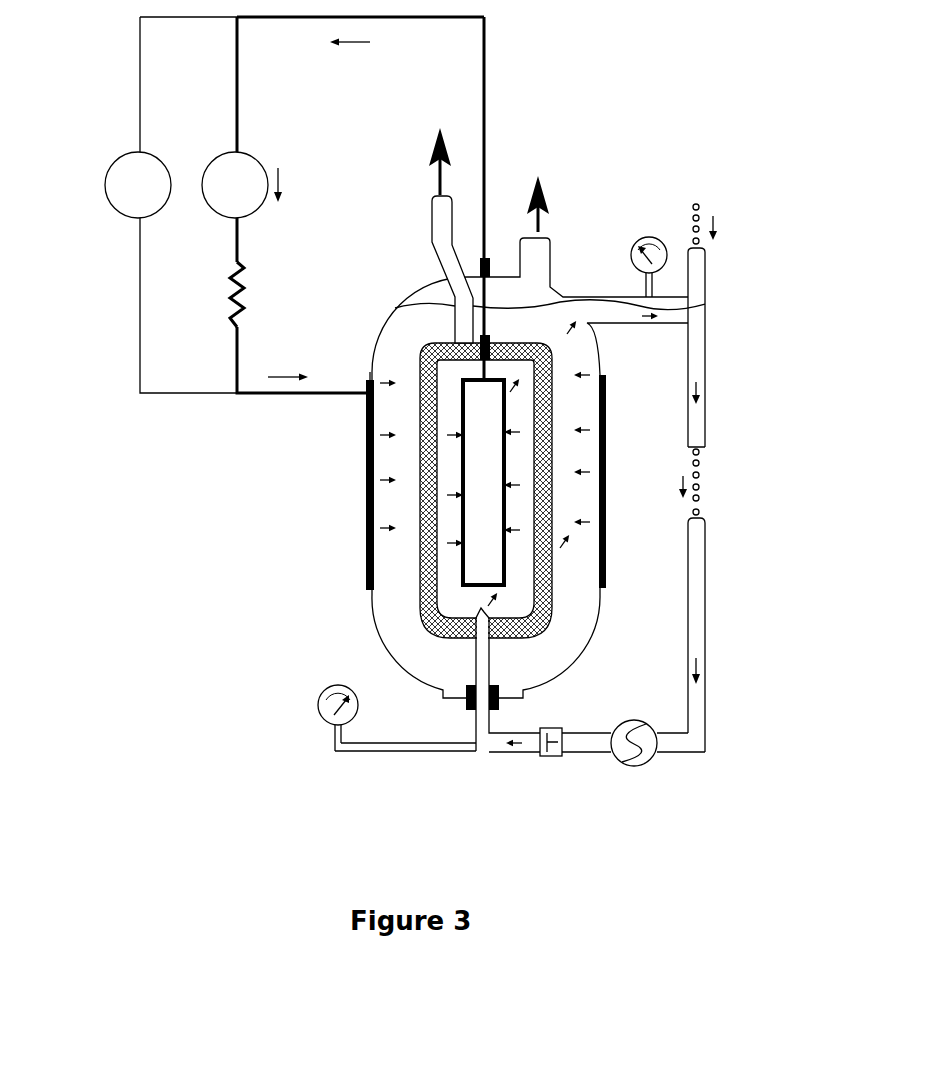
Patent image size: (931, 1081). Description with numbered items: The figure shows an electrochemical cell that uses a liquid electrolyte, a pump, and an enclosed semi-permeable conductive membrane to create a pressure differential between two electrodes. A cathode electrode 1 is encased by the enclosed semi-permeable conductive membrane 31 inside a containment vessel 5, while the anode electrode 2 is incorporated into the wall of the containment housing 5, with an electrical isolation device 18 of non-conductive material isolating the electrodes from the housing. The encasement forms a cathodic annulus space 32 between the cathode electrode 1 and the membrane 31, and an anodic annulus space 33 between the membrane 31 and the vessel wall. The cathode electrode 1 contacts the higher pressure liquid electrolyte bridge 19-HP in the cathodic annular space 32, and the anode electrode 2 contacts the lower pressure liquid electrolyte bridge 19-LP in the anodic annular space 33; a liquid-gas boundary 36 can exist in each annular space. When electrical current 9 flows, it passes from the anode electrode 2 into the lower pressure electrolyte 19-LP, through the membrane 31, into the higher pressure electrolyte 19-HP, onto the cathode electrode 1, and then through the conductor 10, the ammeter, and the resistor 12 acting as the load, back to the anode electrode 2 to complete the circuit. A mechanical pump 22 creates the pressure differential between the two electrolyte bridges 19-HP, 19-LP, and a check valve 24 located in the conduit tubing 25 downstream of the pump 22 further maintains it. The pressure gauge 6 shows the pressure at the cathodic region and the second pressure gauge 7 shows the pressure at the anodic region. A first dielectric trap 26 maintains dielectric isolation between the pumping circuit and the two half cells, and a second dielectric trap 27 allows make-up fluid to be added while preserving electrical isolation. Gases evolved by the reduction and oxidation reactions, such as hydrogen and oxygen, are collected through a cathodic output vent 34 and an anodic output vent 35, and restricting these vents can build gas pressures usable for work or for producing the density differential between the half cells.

The conductor 10 is at (233, 87).
The electrical current 9 is at (283, 165).
The resistor 12 is at (225, 305).
The cathodic output vent 34 is at (430, 190).
The anodic output vent 35 is at (560, 195).
The liquid-gas boundary 36 is at (432, 305).
The electrical isolation device 18 is at (490, 258).
The cathode electrode 1 is at (480, 415).
The anode electrode 2 is at (368, 430).
The pressure gauge 7 is at (655, 238).
The second dielectric trap 27 is at (705, 215).
The first dielectric trap 26 is at (703, 487).
The conduit tubing 25 is at (705, 632).
The mechanical pump 22 is at (645, 773).
The check valve 24 is at (552, 757).
The enclosed semi-permeable conductive membrane 31 is at (547, 623).
The pressure gauge 6 is at (316, 718).
The containment vessel 5 is at (405, 665).
The lower pressure liquid electrolyte bridge 19-LP is at (410, 554).
The higher pressure liquid electrolyte bridge 19-HP is at (460, 615).
The cathodic annulus space 32 is at (515, 575).
The anodic annulus space 33 is at (573, 610).